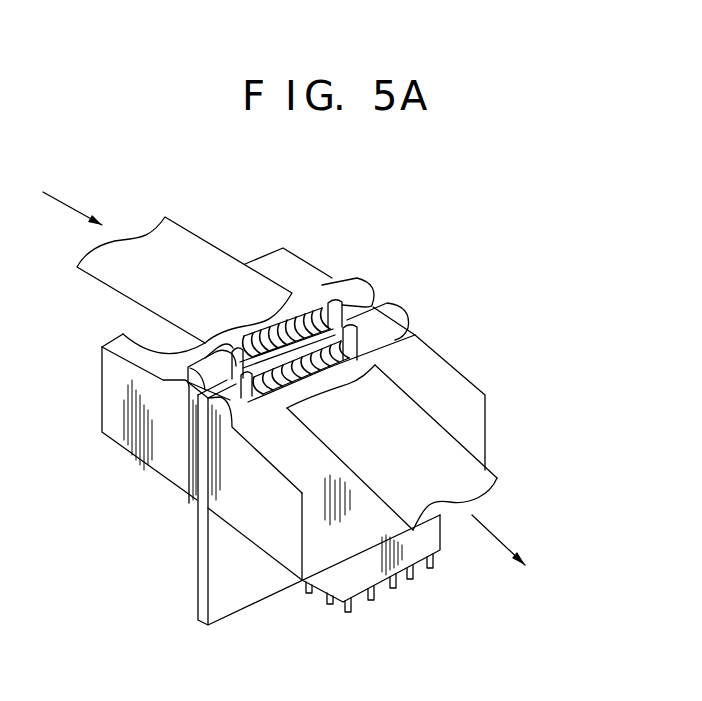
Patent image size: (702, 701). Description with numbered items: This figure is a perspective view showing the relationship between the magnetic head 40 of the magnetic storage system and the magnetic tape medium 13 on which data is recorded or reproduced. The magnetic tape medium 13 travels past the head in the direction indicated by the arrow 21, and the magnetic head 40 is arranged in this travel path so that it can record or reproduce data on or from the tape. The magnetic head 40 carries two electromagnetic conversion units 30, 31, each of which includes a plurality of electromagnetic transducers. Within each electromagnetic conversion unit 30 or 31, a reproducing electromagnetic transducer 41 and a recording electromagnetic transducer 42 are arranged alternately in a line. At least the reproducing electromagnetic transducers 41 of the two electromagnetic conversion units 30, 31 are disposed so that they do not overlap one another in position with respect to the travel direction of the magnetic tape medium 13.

The magnetic tape medium 13 is at (207, 258).
The arrow 21 is at (495, 525).
The electromagnetic conversion unit 30 is at (322, 277).
The electromagnetic conversion unit 31 is at (415, 337).
The magnetic head 40 is at (288, 267).
The reproducing electromagnetic transducer 41 is at (287, 408).
The recording electromagnetic transducer 42 is at (123, 334).